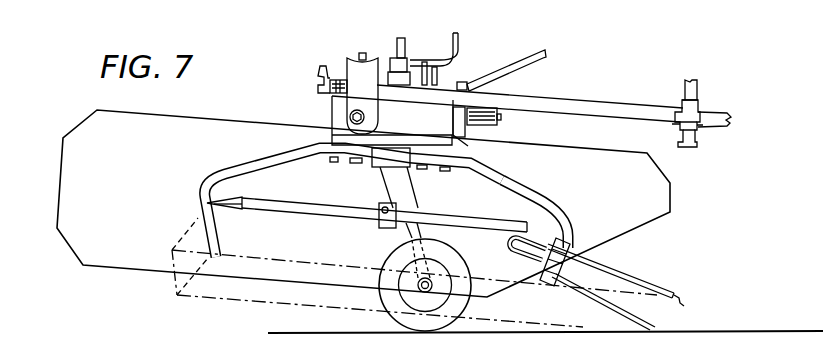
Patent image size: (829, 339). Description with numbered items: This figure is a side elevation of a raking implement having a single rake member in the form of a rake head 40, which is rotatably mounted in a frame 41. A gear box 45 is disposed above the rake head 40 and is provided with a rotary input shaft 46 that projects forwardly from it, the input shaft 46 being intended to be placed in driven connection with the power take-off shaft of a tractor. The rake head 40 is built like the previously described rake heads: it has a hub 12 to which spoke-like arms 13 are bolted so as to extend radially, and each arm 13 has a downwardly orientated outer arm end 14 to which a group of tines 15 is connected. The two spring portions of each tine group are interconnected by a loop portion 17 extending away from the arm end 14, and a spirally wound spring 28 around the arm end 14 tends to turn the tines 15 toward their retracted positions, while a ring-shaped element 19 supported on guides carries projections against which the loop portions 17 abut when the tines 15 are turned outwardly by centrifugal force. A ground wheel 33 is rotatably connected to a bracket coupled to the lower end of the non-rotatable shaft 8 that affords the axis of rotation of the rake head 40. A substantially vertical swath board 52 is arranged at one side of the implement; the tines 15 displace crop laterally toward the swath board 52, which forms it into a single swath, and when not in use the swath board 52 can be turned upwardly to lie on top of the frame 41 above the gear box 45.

The non-rotatable shaft 8 is at (387, 193).
The hub 12 is at (348, 145).
The spoke-like arm 13 is at (263, 166).
The arm end 14 is at (221, 246).
The tines 15 is at (668, 304).
The loop portion 17 is at (518, 255).
The ring-shaped element 19 is at (289, 213).
The spirally wound spring 28 is at (557, 268).
The ground wheel 33 is at (388, 258).
The rake head 40 is at (547, 183).
The frame 41 is at (615, 102).
The gear box 45 is at (333, 107).
The rotary input shaft 46 is at (500, 122).
The swath board 52 is at (217, 126).